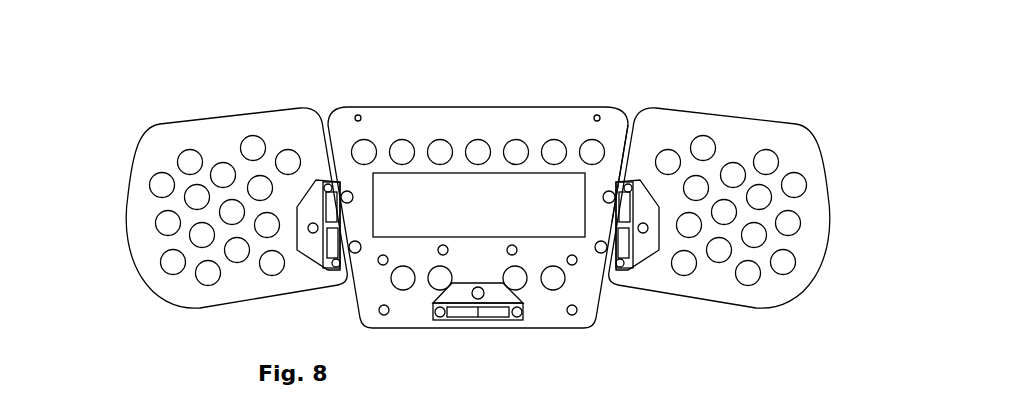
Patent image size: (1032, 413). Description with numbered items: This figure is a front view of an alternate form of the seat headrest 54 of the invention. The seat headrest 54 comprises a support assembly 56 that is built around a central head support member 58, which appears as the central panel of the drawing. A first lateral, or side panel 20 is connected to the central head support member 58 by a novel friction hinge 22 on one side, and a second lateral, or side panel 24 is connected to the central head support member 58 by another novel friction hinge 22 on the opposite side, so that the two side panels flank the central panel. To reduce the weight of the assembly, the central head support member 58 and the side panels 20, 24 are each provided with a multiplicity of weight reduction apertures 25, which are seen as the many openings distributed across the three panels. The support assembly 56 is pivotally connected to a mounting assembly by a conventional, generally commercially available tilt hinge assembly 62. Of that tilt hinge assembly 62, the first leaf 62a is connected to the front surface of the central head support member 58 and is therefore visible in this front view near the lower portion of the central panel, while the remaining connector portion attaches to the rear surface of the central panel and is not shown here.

The first lateral side panel 20 is at (257, 125).
The friction hinge 22 is at (303, 262).
The second lateral side panel 24 is at (753, 133).
The weight reduction apertures 25 is at (165, 262).
The seat headrest 54 is at (583, 93).
The support assembly 56 is at (620, 108).
The central head support member 58 is at (474, 123).
The tilt hinge assembly 62 is at (502, 327).
The first leaf 62a is at (500, 298).